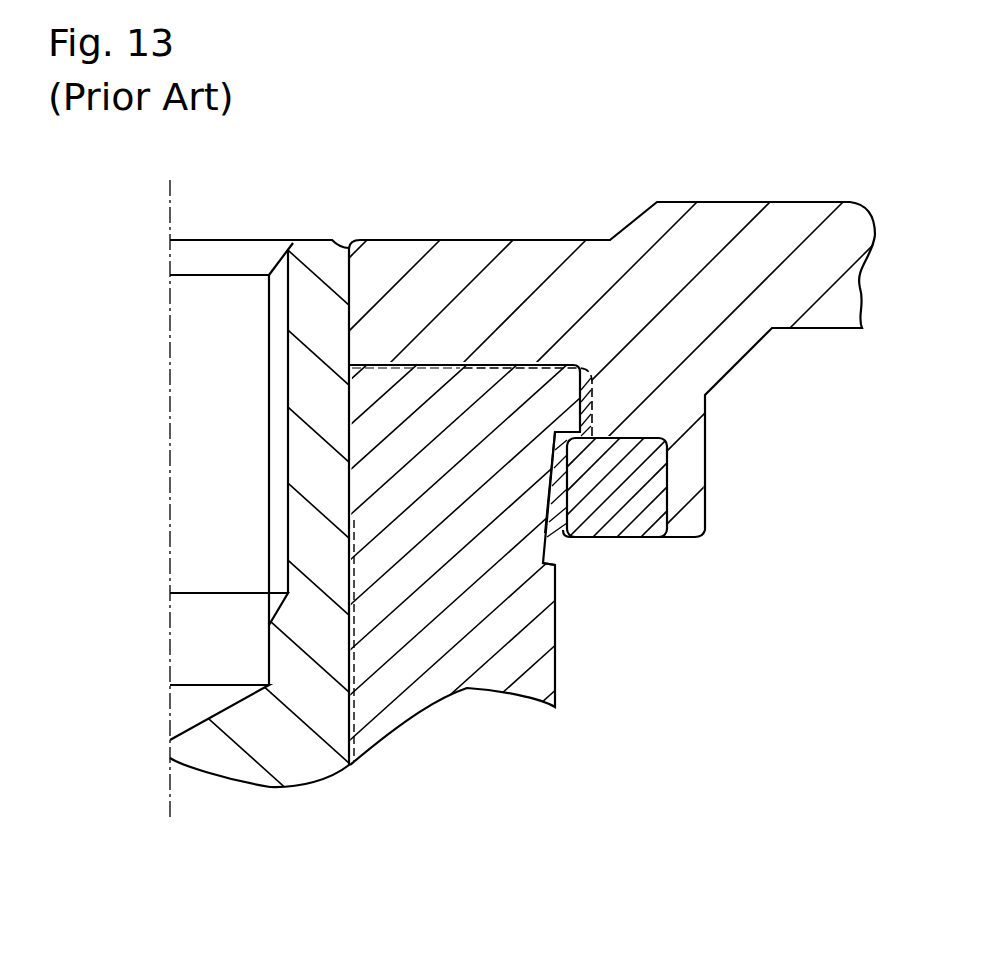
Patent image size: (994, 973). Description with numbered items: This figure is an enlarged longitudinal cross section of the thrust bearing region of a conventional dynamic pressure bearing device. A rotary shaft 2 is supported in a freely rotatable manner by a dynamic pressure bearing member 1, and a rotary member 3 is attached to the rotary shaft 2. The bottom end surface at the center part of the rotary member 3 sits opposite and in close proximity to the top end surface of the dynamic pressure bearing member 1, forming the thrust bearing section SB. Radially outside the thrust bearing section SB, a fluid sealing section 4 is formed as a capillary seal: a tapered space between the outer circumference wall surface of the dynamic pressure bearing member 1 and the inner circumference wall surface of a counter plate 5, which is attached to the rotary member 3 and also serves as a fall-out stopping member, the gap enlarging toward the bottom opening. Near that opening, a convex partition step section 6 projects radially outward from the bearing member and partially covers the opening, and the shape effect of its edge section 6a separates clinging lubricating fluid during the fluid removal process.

The dynamic pressure bearing member 1 is at (557, 667).
The rotary shaft 2 is at (317, 785).
The rotary member 3 is at (752, 200).
The fluid sealing section 4 is at (565, 480).
The counter plate 5 is at (550, 517).
The partition step section 6 is at (673, 542).
The edge section 6a is at (555, 566).
The thrust bearing section SB is at (515, 362).